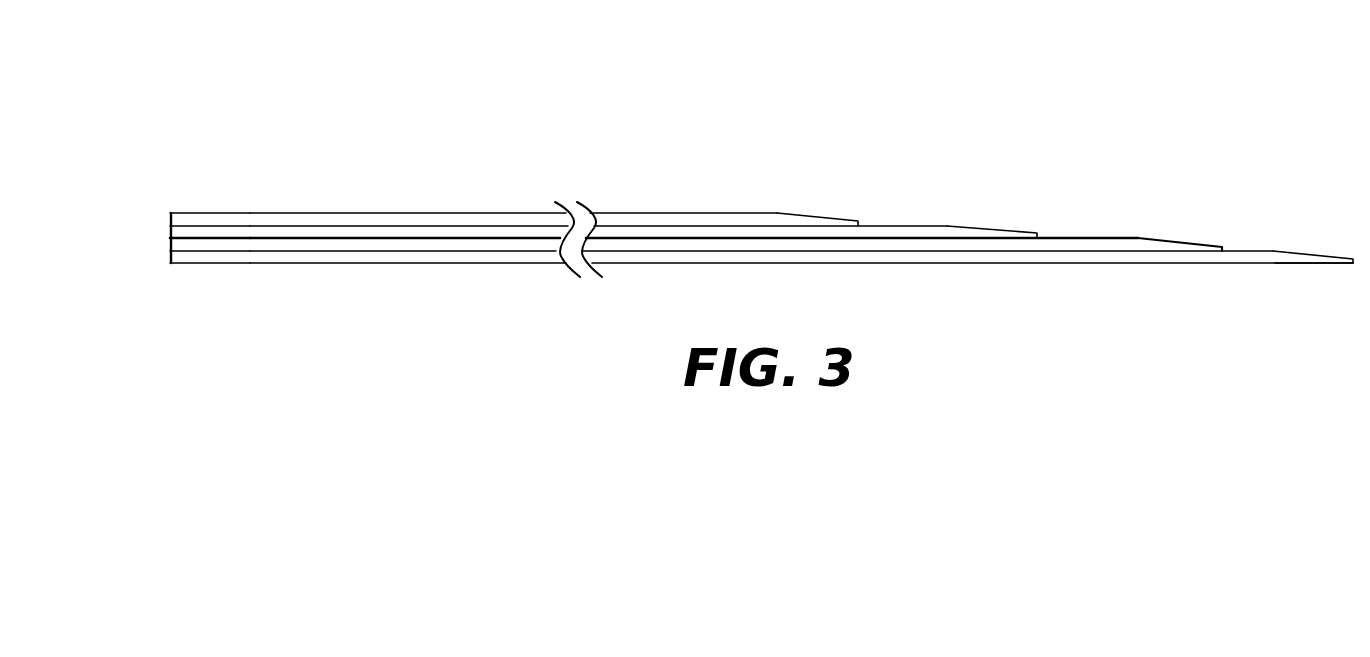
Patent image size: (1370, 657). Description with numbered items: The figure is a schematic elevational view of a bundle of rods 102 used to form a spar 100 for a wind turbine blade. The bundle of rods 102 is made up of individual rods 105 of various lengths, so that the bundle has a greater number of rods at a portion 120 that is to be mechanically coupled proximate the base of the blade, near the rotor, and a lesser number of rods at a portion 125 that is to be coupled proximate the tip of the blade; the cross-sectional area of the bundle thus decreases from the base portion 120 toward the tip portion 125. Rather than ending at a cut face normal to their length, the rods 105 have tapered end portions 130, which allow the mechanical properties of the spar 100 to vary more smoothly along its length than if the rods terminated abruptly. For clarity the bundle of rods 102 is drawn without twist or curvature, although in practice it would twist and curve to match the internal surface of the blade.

The spar 100 is at (907, 87).
The bundle of rods 102 is at (145, 196).
The rod 105 is at (373, 212).
The portion proximate the base 120 is at (245, 273).
The portion proximate the tip 125 is at (1353, 272).
The tapered end portion 130 is at (858, 211).